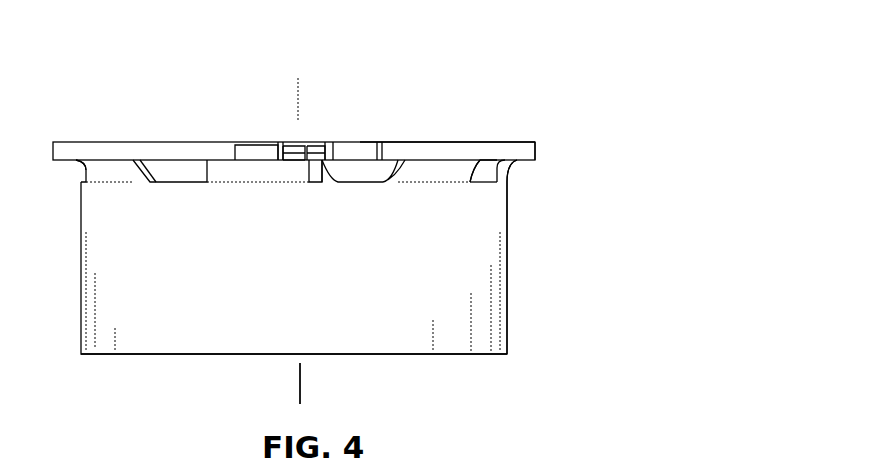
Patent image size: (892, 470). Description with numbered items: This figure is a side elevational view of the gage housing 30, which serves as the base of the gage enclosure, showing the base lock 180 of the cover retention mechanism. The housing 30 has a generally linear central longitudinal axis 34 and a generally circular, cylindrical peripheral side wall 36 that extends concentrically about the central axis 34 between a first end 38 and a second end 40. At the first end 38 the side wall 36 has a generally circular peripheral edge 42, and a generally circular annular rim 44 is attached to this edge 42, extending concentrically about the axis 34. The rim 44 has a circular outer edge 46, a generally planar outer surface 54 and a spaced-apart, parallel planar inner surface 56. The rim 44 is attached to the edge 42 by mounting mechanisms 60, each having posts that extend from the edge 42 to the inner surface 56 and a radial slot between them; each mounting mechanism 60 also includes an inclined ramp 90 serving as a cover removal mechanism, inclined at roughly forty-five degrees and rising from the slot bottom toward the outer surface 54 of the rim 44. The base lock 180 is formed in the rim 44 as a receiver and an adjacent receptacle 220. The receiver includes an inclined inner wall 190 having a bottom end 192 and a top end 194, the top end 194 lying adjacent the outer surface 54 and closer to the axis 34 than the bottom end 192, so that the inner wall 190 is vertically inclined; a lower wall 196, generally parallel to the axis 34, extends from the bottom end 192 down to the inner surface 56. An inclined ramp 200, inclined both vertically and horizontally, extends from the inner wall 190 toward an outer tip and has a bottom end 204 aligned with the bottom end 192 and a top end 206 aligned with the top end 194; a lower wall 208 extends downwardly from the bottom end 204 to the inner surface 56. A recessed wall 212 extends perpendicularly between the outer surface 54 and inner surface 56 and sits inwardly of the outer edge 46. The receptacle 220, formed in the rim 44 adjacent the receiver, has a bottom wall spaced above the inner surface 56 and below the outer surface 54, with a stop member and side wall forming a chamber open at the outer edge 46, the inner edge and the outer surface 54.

The housing 30 is at (519, 87).
The central longitudinal axis 34 is at (300, 388).
The peripheral side wall 36 is at (507, 265).
The first end 38 is at (510, 180).
The second end 40 is at (507, 354).
The peripheral edge 42 is at (80, 183).
The rim 44 is at (535, 145).
The outer edge 46 is at (535, 153).
The outer surface 54 is at (513, 142).
The inner surface 56 is at (523, 162).
The mounting mechanism 60 is at (110, 167).
The inclined ramp 90 is at (402, 162).
The base lock 180 is at (365, 141).
The inner wall 190 is at (357, 150).
The bottom end 192 is at (330, 166).
The top end 194 is at (329, 143).
The lower wall 196 is at (322, 165).
The inclined ramp 200 is at (302, 150).
The bottom end 204 is at (300, 160).
The top end 206 is at (293, 143).
The lower wall 208 is at (290, 162).
The recessed wall 212 is at (362, 143).
The receptacle 220 is at (247, 145).